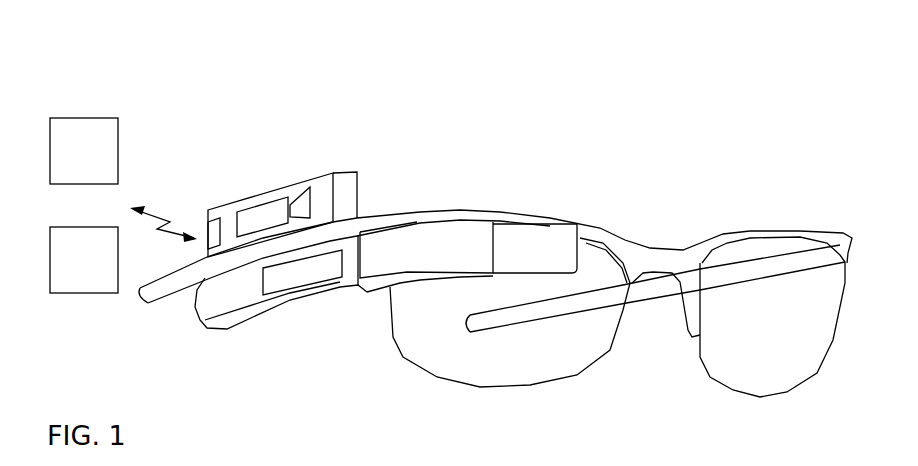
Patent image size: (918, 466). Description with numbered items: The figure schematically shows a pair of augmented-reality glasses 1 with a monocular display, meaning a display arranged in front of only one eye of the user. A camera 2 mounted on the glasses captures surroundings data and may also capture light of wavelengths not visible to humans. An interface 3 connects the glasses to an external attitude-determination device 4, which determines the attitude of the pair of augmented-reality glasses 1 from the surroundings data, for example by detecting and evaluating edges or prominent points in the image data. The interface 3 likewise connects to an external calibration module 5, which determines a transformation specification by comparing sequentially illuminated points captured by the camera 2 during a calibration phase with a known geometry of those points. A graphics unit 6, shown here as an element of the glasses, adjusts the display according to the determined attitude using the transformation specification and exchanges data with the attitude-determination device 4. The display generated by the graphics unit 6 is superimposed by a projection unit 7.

The pair of augmented-reality glasses 1 is at (636, 173).
The camera 2 is at (308, 180).
The interface 3 is at (208, 227).
The attitude-determination device 4 is at (85, 118).
The calibration module 5 is at (85, 293).
The graphics unit 6 is at (293, 288).
The projection unit 7 is at (533, 227).